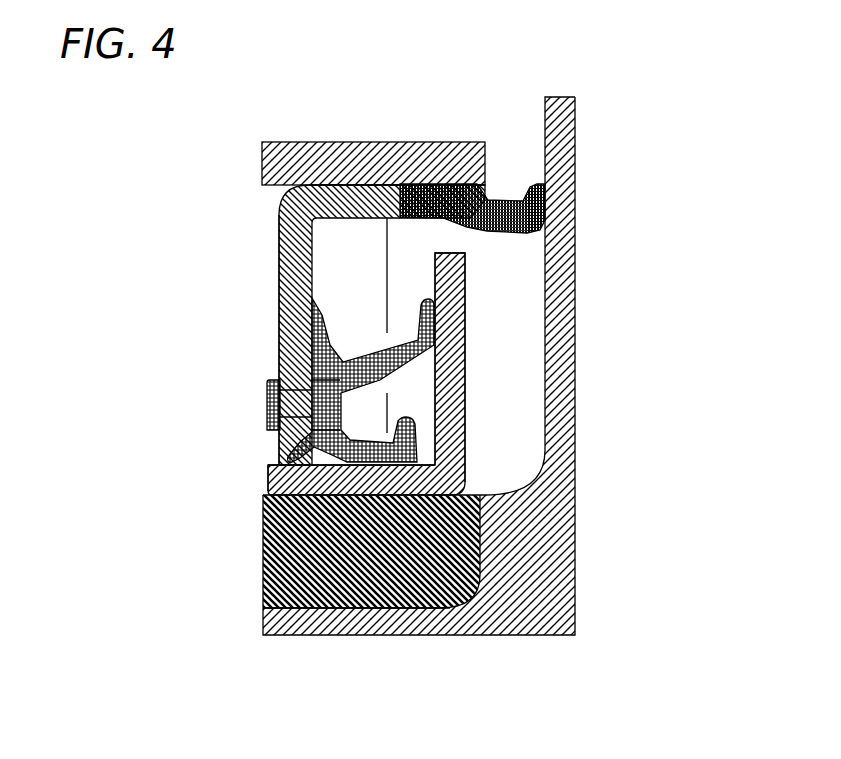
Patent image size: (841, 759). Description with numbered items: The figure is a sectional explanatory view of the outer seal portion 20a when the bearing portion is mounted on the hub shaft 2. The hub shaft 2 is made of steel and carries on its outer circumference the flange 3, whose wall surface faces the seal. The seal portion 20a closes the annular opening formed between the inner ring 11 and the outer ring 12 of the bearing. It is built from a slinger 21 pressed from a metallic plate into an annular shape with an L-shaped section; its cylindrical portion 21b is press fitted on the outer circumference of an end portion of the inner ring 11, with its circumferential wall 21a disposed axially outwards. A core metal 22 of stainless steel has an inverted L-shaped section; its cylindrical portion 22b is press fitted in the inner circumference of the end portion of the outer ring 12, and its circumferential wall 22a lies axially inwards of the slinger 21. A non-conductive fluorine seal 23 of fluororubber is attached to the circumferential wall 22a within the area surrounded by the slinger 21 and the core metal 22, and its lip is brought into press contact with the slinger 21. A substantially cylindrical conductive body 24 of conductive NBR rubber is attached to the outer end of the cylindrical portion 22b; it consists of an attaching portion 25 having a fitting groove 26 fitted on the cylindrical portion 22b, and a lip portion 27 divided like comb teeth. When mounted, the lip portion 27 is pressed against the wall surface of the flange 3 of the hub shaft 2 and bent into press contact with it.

The hub shaft 2 is at (560, 547).
The flange 3 is at (547, 397).
The inner ring 11 is at (433, 582).
The outer ring 12 is at (400, 142).
The seal portion 20a is at (258, 272).
The slinger 21 is at (438, 421).
The circumferential wall 21a is at (465, 303).
The cylindrical portion 21b is at (327, 493).
The core metal 22 is at (311, 277).
The circumferential wall 22a is at (280, 343).
The cylindrical portion 22b is at (347, 190).
The fluorine seal 23 is at (267, 402).
The conductive body 24 is at (507, 185).
The attaching portion 25 is at (529, 156).
The fitting groove 26 is at (441, 190).
The lip portion 27 is at (547, 185).